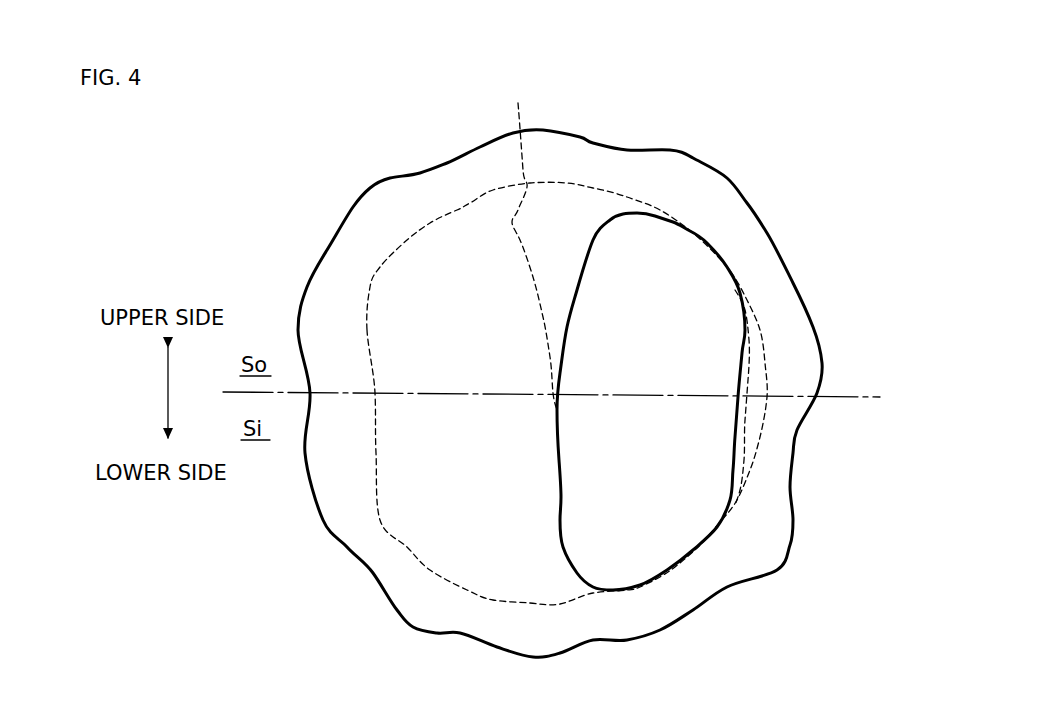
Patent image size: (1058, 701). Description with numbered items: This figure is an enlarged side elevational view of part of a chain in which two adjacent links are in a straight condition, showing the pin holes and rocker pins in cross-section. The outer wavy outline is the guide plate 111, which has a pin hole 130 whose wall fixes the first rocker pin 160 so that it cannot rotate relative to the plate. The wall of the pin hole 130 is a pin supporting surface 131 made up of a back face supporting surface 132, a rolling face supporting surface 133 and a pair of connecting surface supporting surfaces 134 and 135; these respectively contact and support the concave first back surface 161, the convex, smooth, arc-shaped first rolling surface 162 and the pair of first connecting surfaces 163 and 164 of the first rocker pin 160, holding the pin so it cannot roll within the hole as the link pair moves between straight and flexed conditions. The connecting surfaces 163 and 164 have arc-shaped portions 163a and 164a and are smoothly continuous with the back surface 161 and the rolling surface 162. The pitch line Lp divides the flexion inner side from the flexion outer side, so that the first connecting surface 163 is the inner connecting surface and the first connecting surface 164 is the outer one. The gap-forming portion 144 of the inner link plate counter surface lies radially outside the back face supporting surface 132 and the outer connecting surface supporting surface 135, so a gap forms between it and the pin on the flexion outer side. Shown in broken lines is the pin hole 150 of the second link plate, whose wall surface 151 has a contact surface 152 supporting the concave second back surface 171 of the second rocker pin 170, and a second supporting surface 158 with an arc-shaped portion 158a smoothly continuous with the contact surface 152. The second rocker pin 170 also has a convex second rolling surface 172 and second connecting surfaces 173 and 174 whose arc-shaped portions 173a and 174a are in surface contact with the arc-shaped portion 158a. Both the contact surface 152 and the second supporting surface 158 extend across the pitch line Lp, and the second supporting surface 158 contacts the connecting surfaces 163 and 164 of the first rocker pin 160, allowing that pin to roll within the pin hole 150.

The guide plate 111 is at (763, 533).
The pin hole 130 is at (580, 557).
The pin supporting surface 131 is at (565, 495).
The back face supporting surface 132 is at (742, 358).
The rolling face supporting surface 133 is at (573, 293).
The connecting surface supporting surface 134 is at (653, 577).
The connecting surface supporting surface 135 is at (727, 268).
The gap-forming portion 144 is at (727, 327).
The pin hole 150 is at (570, 190).
The wall surface 151 is at (563, 599).
The contact surface 152 is at (377, 452).
The second supporting surface 158 is at (753, 412).
The arc-shaped portion 158a is at (745, 477).
The first rocker pin 160 is at (592, 328).
The first back surface 161 is at (763, 363).
The first rolling surface 162 is at (577, 273).
The first connecting surface 163 is at (593, 590).
The arc-shaped portion 163a is at (680, 568).
The first connecting surface 164 is at (627, 210).
The arc-shaped portion 164a is at (707, 245).
The second rocker pin 170 is at (513, 220).
The second back surface 171 is at (367, 337).
The second rolling surface 172 is at (550, 338).
The second connecting surface 173 is at (498, 596).
The arc-shaped portion 173a is at (407, 547).
The second connecting surface 174 is at (488, 197).
The arc-shaped portion 174a is at (405, 243).
The pitch line Lp is at (873, 396).